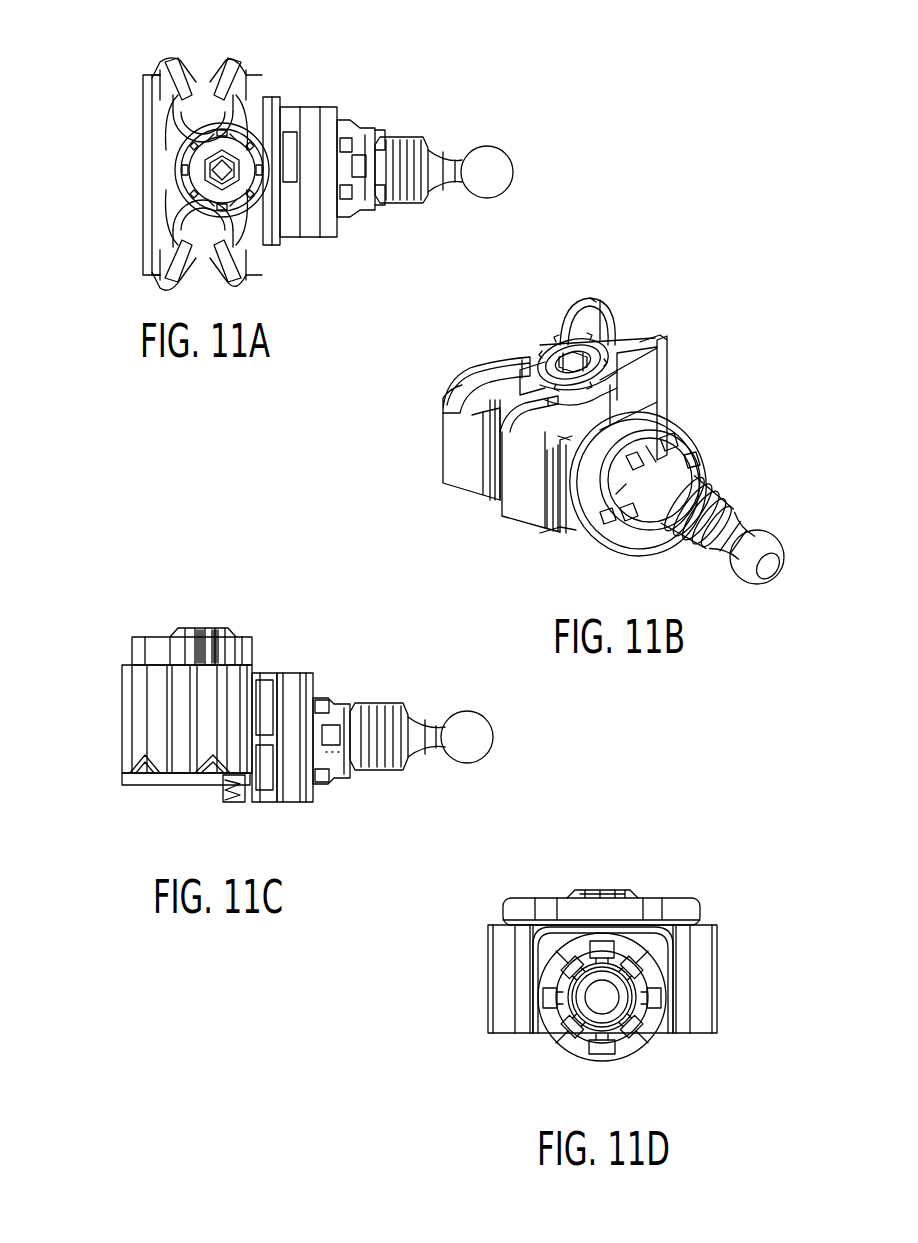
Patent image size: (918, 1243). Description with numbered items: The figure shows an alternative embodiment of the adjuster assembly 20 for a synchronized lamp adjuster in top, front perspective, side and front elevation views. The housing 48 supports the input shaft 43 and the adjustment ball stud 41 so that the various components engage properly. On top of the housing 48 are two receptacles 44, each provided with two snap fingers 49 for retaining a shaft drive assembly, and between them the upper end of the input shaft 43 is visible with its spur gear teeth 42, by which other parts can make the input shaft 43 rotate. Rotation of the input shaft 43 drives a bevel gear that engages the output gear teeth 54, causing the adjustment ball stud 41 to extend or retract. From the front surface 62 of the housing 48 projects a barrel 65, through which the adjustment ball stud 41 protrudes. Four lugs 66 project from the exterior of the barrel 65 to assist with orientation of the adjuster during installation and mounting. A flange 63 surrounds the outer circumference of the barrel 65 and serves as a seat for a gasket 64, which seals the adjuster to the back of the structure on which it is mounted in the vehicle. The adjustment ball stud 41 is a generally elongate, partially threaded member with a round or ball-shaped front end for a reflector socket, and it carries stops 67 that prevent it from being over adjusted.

In FIG. 11A, the adjuster assembly 20 is at (306, 62).
In FIG. 11B, the adjuster assembly 20 is at (752, 380).
In FIG. 11C, the adjuster assembly 20 is at (104, 711).
In FIG. 11D, the adjuster assembly 20 is at (424, 985).
In FIG. 11A, the adjustment ball stud 41 is at (505, 170).
In FIG. 11B, the adjustment ball stud 41 is at (766, 548).
In FIG. 11C, the adjustment ball stud 41 is at (478, 742).
In FIG. 11D, the adjustment ball stud 41 is at (582, 1012).
In FIG. 11A, the spur gear teeth 42 is at (198, 162).
In FIG. 11B, the spur gear teeth 42 is at (600, 352).
In FIG. 11A, the input shaft 43 is at (200, 182).
In FIG. 11B, the input shaft 43 is at (552, 346).
In FIG. 11C, the input shaft 43 is at (205, 628).
In FIG. 11D, the input shaft 43 is at (605, 890).
In FIG. 11A, the receptacle 44 is at (175, 108).
In FIG. 11B, the receptacle 44 is at (592, 300).
In FIG. 11D, the receptacle 44 is at (515, 897).
In FIG. 11A, the housing 48 is at (147, 142).
In FIG. 11B, the housing 48 is at (540, 345).
In FIG. 11C, the housing 48 is at (187, 719).
In FIG. 11D, the housing 48 is at (602, 979).
In FIG. 11A, the snap fingers 49 is at (225, 72).
In FIG. 11B, the snap fingers 49 is at (492, 440).
In FIG. 11C, the snap fingers 49 is at (188, 782).
In FIG. 11C, the output gear teeth 54 is at (227, 797).
In FIG. 11A, the front surface 62 is at (268, 100).
In FIG. 11B, the front surface 62 is at (650, 408).
In FIG. 11C, the front surface 62 is at (252, 638).
In FIG. 11D, the front surface 62 is at (657, 947).
In FIG. 11A, the flange 63 is at (290, 238).
In FIG. 11B, the flange 63 is at (570, 507).
In FIG. 11C, the flange 63 is at (263, 678).
In FIG. 11A, the gasket 64 is at (330, 226).
In FIG. 11B, the gasket 64 is at (662, 433).
In FIG. 11C, the gasket 64 is at (293, 673).
In FIG. 11D, the gasket 64 is at (664, 975).
In FIG. 11A, the barrel 65 is at (356, 126).
In FIG. 11B, the barrel 65 is at (648, 494).
In FIG. 11C, the barrel 65 is at (340, 778).
In FIG. 11D, the barrel 65 is at (602, 997).
In FIG. 11A, the lugs 66 is at (352, 178).
In FIG. 11B, the lugs 66 is at (664, 463).
In FIG. 11C, the lugs 66 is at (332, 735).
In FIG. 11D, the lugs 66 is at (600, 940).
In FIG. 11A, the stops 67 is at (415, 137).
In FIG. 11B, the stops 67 is at (692, 545).
In FIG. 11C, the stops 67 is at (397, 752).
In FIG. 11D, the stops 67 is at (620, 1032).